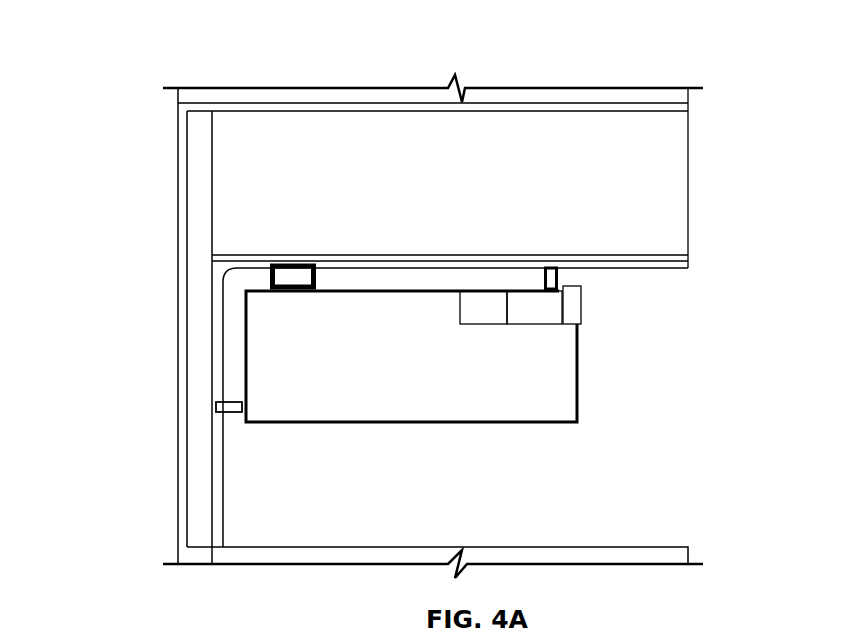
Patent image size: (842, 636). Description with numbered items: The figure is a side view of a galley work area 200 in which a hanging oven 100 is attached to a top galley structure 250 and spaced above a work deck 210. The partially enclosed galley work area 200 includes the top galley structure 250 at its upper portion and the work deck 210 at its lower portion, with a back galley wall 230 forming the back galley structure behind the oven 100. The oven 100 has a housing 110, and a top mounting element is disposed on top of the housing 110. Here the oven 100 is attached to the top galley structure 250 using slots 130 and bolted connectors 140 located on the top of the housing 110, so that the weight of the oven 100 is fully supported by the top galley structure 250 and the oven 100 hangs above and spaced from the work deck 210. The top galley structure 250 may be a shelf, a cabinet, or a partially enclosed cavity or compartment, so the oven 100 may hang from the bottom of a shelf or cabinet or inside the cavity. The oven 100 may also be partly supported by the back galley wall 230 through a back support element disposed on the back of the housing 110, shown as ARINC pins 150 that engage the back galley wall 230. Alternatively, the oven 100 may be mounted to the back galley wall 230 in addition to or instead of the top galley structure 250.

The galley work area 200 is at (162, 45).
The top galley structure 250 is at (460, 175).
The back galley wall 230 is at (193, 368).
The work deck 210 is at (657, 555).
The hanging oven 100 is at (420, 334).
The oven housing 110 is at (428, 360).
The slots 130 is at (292, 263).
The bolted connectors 140 is at (553, 262).
The ARINC pins 150 is at (215, 406).